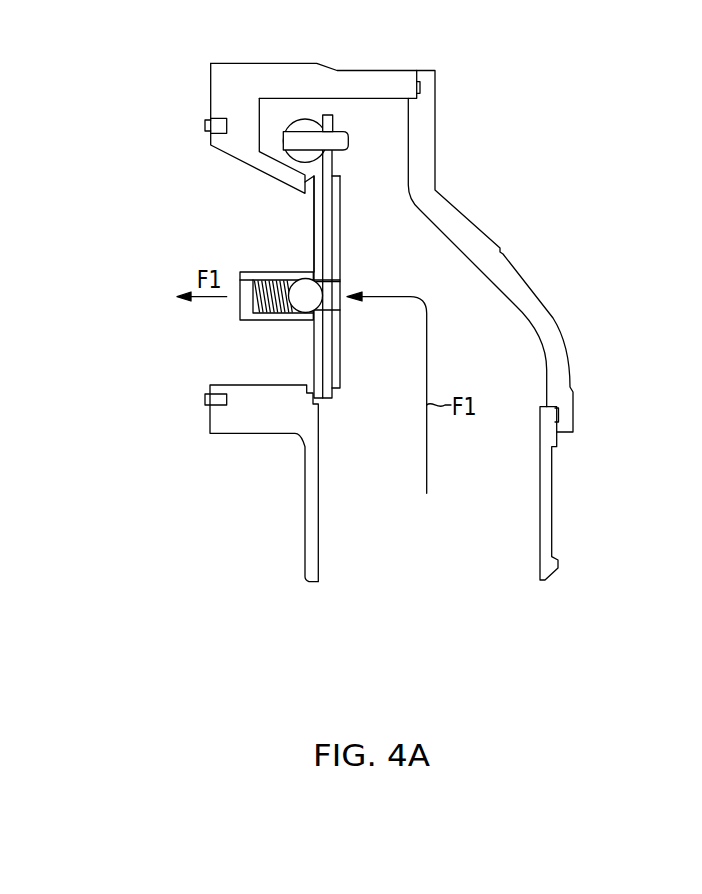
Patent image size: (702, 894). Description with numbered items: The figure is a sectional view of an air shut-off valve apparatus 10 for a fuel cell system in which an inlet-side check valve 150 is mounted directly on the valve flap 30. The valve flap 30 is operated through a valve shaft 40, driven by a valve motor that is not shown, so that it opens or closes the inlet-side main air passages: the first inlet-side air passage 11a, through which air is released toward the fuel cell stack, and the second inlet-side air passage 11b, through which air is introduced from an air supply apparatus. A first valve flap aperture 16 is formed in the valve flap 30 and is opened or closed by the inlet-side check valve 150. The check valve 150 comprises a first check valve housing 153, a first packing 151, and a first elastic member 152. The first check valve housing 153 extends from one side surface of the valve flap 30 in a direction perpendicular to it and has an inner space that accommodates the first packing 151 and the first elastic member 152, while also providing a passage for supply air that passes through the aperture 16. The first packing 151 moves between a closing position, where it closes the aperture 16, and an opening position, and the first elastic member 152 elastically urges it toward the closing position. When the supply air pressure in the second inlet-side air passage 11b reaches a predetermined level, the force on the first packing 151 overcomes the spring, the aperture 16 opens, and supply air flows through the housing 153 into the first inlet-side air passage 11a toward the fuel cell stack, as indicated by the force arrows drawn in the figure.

The camera module housing frame 10 is at (515, 106).
The first inlet-side air passage 11a is at (263, 237).
The second inlet-side air passage 11b is at (421, 522).
The first valve flap aperture 16 is at (338, 319).
The valve flap 30 is at (355, 242).
The valve shaft 40 is at (309, 133).
The inlet-side check valve 150 is at (191, 350).
The first packing 151 is at (302, 303).
The first elastic member 152 is at (260, 314).
The first check valve housing 153 is at (253, 312).